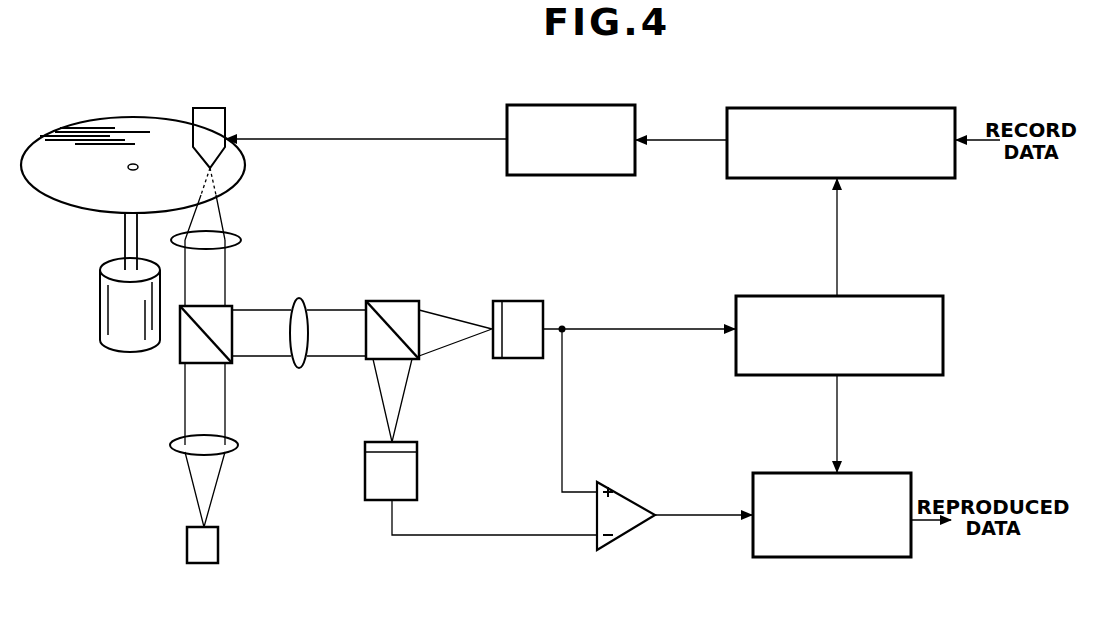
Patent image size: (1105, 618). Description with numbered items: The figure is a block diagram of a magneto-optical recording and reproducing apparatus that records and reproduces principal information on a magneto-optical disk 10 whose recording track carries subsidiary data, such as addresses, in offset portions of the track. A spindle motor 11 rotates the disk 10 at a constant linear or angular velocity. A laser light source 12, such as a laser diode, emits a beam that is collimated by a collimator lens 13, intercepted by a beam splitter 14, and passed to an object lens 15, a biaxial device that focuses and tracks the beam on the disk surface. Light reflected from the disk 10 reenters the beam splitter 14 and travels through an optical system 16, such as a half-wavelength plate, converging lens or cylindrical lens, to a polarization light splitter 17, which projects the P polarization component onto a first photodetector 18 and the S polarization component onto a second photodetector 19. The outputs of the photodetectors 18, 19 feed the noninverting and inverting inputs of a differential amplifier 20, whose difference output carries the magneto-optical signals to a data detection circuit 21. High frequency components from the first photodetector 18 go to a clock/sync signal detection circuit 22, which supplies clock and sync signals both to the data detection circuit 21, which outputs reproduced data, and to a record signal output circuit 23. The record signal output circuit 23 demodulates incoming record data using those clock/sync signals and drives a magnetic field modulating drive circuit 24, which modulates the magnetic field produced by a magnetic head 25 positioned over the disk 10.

The magneto-optical disk 10 is at (95, 132).
The spindle motor 11 is at (108, 298).
The laser light source 12 is at (190, 540).
The collimator lens 13 is at (180, 443).
The beam splitter 14 is at (213, 315).
The object lens 15 is at (232, 237).
The optical system 16 is at (299, 300).
The polarization light splitter 17 is at (405, 300).
The first photodetector 18 is at (530, 308).
The second photodetector 19 is at (410, 465).
The differential amplifier 20 is at (630, 505).
The data detection circuit 21 is at (838, 558).
The clock/sync signal detection circuit 22 is at (943, 298).
The record signal output circuit 23 is at (762, 108).
The magnetic field modulating drive circuit 24 is at (515, 105).
The magnetic head 25 is at (212, 118).